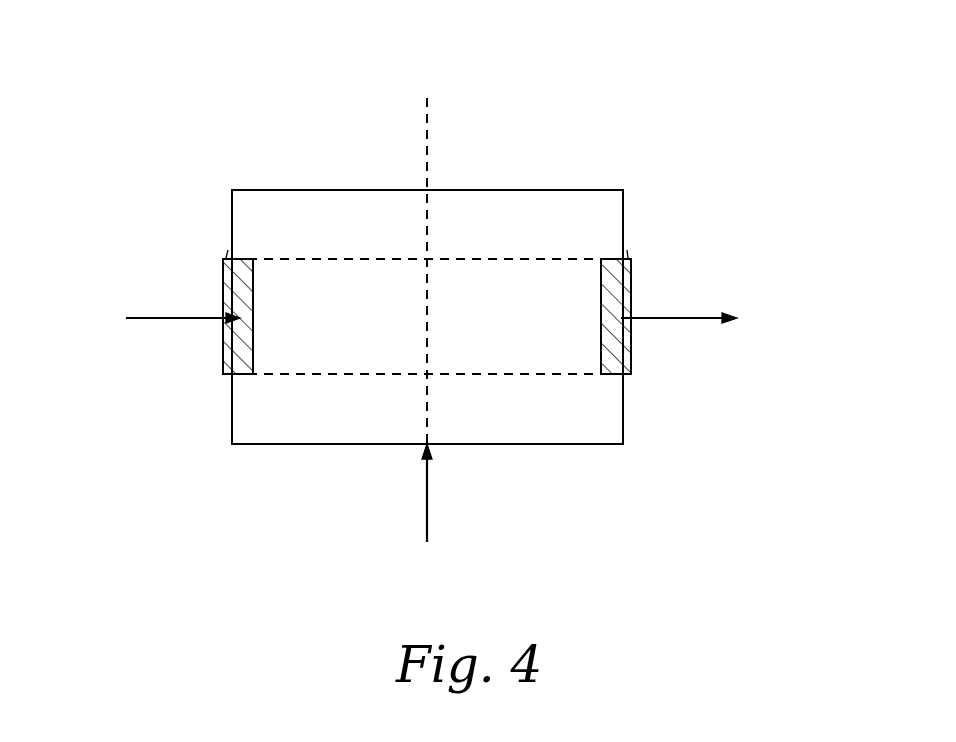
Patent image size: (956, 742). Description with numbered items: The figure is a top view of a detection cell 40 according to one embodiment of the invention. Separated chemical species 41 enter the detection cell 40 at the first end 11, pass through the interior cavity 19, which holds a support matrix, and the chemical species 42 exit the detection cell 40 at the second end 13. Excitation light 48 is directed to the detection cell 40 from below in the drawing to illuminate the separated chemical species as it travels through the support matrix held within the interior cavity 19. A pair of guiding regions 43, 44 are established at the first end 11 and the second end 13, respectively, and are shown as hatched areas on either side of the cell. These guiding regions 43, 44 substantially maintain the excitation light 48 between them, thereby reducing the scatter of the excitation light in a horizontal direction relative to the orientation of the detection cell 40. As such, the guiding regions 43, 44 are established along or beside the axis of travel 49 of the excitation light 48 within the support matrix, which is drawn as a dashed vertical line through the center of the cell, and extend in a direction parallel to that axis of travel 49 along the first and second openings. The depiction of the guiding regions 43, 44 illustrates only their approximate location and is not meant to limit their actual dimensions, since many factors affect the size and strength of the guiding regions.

The detection cell 40 is at (706, 146).
The axis of travel 49 is at (427, 143).
The interior cavity 19 is at (362, 282).
The first end 11 is at (228, 331).
The second end 13 is at (626, 353).
The guiding region 43 is at (228, 258).
The guiding region 44 is at (628, 258).
The separated chemical species 41 is at (183, 304).
The chemical species 42 is at (679, 304).
The excitation light 48 is at (427, 490).